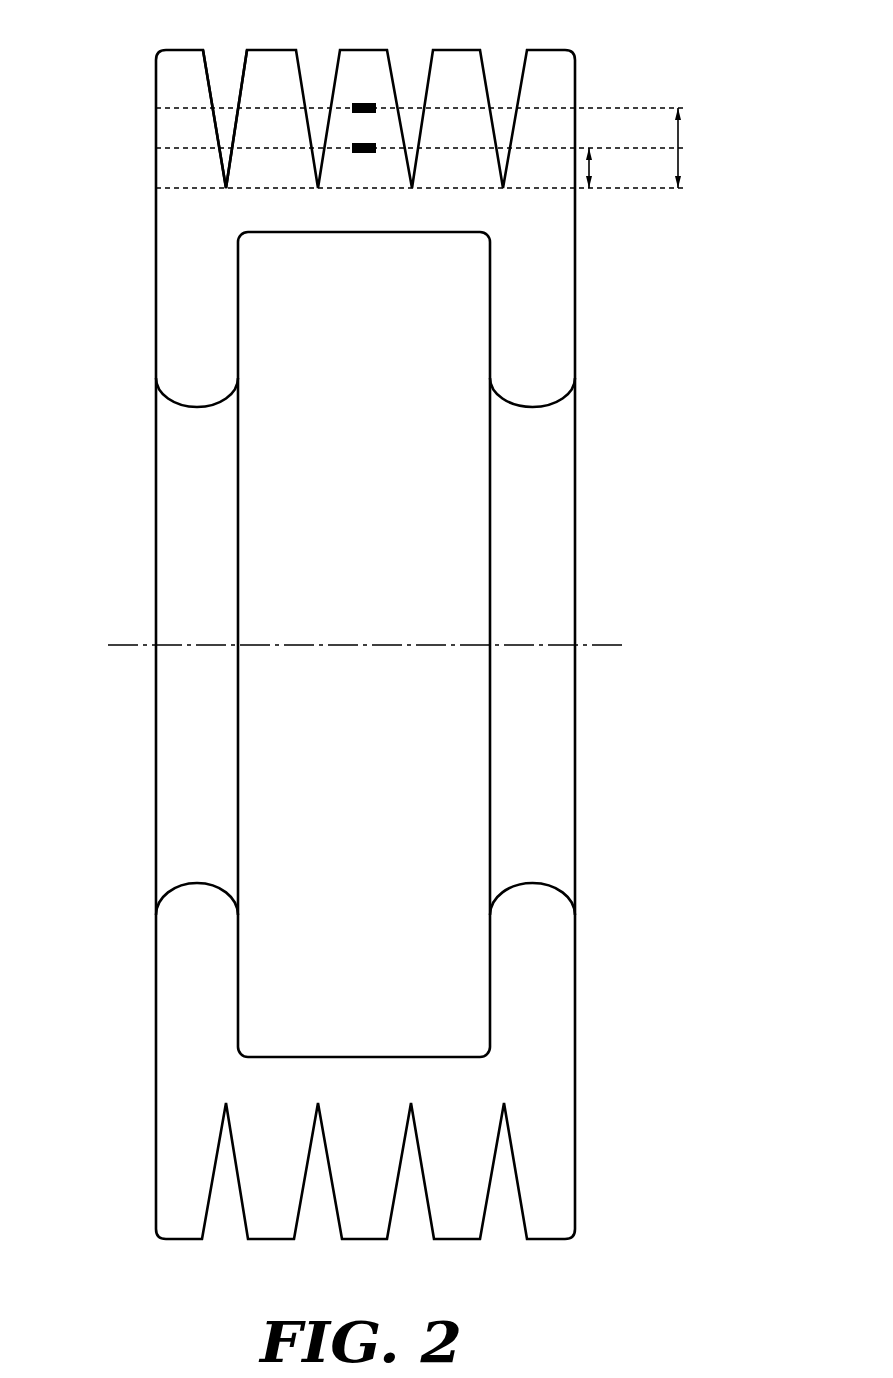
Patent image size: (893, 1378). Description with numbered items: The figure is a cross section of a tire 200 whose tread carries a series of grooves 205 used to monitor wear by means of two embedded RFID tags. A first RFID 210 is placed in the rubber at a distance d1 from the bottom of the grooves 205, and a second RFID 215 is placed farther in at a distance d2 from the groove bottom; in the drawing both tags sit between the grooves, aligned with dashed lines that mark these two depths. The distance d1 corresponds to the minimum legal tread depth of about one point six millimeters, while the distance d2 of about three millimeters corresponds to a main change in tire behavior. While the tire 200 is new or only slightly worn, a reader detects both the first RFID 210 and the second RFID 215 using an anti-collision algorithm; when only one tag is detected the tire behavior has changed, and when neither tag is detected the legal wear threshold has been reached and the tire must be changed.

The tire 200 is at (156, 502).
The grooves 205 is at (226, 76).
The second RFID 215 is at (361, 103).
The first RFID 210 is at (362, 153).
The distance d1 is at (594, 168).
The distance d2 is at (683, 160).